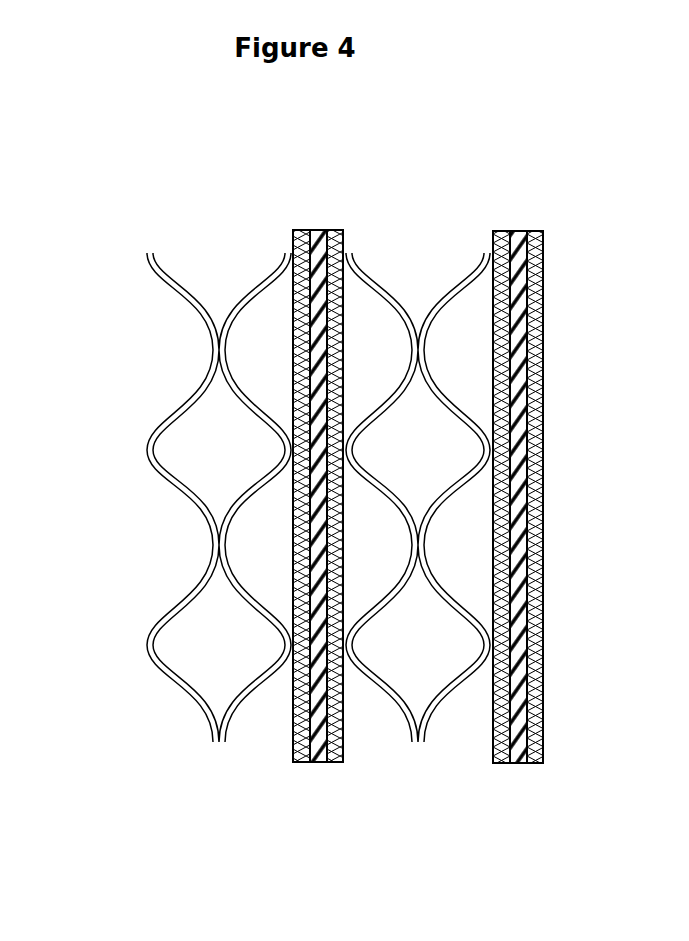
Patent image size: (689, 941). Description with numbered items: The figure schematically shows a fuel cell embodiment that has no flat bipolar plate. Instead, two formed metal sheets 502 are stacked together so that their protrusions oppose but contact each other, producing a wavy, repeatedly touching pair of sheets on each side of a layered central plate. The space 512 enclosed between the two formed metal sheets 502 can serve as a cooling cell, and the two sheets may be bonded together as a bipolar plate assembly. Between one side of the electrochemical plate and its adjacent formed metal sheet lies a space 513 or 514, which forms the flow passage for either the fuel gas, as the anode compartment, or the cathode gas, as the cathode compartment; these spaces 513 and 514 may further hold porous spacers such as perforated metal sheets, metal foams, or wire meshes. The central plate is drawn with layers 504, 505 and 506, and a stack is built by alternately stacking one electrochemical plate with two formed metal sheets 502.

The formed metal sheet 502 is at (301, 776).
The first outer layer 504 is at (243, 540).
The core layer 505 is at (260, 554).
The second outer layer 506 is at (283, 567).
The space between the two formed metal sheets 512 is at (327, 460).
The space between the ECP and its adjacent formed metal sheet 513 is at (233, 260).
The space between the ECP and its adjacent formed metal sheet 514 is at (407, 258).